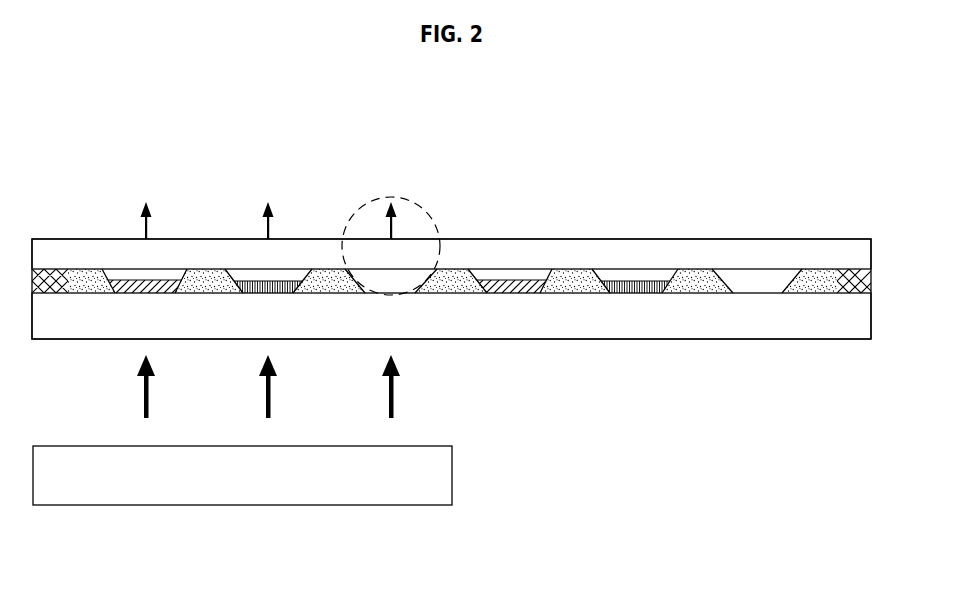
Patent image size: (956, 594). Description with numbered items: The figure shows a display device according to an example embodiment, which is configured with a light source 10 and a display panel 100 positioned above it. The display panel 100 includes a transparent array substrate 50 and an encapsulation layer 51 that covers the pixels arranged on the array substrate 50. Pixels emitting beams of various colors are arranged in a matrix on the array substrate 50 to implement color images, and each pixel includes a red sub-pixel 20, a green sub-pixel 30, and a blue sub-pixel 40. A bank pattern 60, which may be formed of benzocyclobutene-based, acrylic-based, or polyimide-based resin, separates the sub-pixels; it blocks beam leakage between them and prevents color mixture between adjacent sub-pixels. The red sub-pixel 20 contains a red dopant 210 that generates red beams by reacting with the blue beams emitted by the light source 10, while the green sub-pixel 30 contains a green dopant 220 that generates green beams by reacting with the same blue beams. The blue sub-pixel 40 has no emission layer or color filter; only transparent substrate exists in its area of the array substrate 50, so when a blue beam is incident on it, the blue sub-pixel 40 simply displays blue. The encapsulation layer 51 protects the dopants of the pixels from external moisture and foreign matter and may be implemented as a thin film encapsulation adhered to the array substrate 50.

The display panel 100 is at (99, 163).
The light source 10 is at (318, 487).
The red sub-pixel 20 is at (167, 273).
The green sub-pixel 30 is at (290, 273).
The blue sub-pixel 40 is at (408, 273).
The array substrate 50 is at (770, 323).
The encapsulation layer 51 is at (575, 252).
The bank pattern 60 is at (695, 275).
The red dopant 210 is at (512, 295).
The green dopant 220 is at (635, 294).